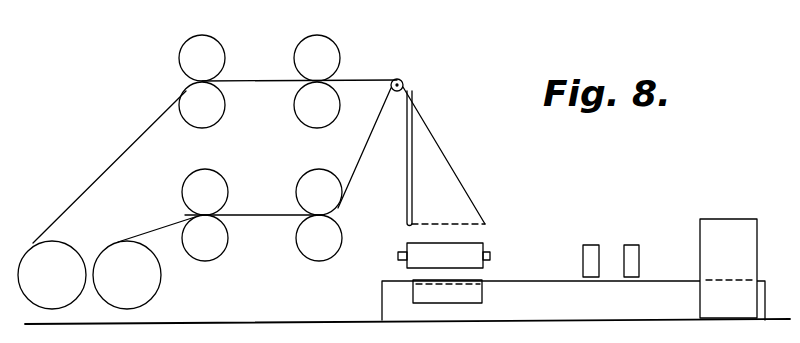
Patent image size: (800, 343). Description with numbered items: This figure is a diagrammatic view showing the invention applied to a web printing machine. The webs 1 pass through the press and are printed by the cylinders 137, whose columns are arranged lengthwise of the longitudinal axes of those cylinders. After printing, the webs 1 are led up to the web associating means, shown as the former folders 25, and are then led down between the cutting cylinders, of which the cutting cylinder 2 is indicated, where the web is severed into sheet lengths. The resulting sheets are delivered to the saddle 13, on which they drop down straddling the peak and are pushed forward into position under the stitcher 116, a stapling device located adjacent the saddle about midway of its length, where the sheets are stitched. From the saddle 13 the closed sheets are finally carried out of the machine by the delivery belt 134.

The web 1 is at (481, 182).
The printing cylinders 137 is at (260, 148).
The former folder 25 is at (407, 200).
The cutting cylinder 2 is at (444, 255).
The saddle 13 is at (573, 300).
The stitcher 116 is at (595, 248).
The delivery belt 134 is at (728, 268).